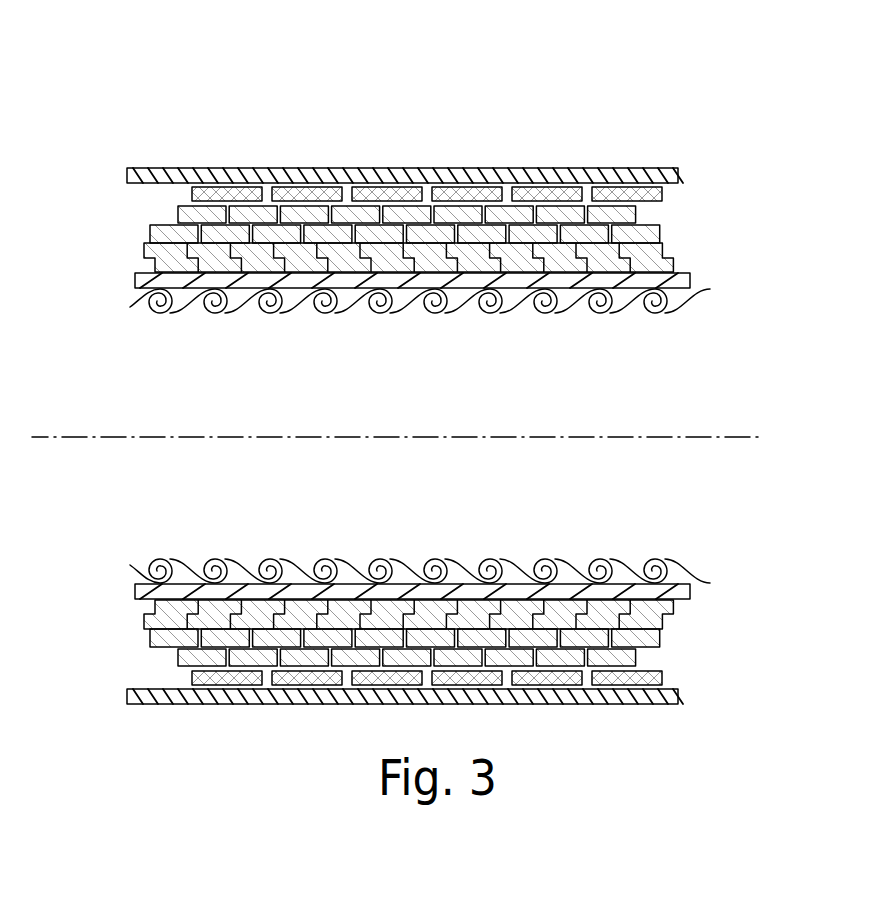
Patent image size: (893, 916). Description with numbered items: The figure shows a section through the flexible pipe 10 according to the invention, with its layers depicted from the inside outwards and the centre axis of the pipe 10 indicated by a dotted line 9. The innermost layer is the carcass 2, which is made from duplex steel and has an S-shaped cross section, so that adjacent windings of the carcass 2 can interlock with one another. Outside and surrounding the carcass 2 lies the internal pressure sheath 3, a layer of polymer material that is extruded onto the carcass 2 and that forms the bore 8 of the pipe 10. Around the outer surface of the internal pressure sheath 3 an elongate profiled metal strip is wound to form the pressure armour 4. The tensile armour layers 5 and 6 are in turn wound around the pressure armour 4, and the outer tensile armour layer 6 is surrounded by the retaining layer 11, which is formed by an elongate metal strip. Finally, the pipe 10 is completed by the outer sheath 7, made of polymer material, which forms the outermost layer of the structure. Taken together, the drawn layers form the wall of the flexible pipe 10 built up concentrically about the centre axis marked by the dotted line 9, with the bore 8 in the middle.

The carcass 2 is at (698, 303).
The internal pressure sheath 3 is at (680, 273).
The pressure armour 4 is at (145, 250).
The tensile armour layer 5 is at (150, 230).
The outer tensile armour layer 6 is at (177, 207).
The outer sheath 7 is at (375, 167).
The bore 8 is at (685, 367).
The dotted line 9 is at (743, 437).
The pipe 10 is at (208, 92).
The retaining layer 11 is at (668, 194).